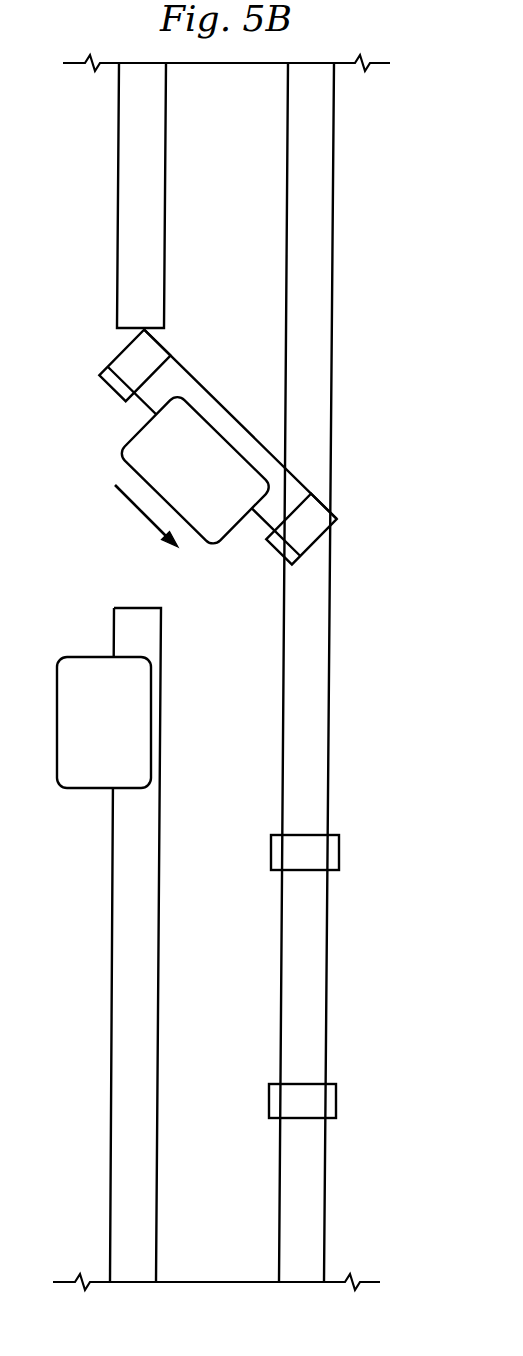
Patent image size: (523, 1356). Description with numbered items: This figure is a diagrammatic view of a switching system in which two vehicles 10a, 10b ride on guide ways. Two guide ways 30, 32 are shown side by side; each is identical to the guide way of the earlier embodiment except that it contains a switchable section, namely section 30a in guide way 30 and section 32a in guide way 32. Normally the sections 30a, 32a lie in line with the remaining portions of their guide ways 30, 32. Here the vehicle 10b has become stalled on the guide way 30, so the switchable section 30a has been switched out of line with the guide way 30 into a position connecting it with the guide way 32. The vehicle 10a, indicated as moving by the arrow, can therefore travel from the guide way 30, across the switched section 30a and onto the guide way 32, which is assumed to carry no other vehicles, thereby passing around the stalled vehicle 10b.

The vehicle 10a is at (172, 478).
The vehicle 10b is at (124, 738).
The guide way 30 is at (118, 128).
The switchable section 30a is at (205, 400).
The guide way 32 is at (333, 283).
The switchable section 32a is at (327, 960).